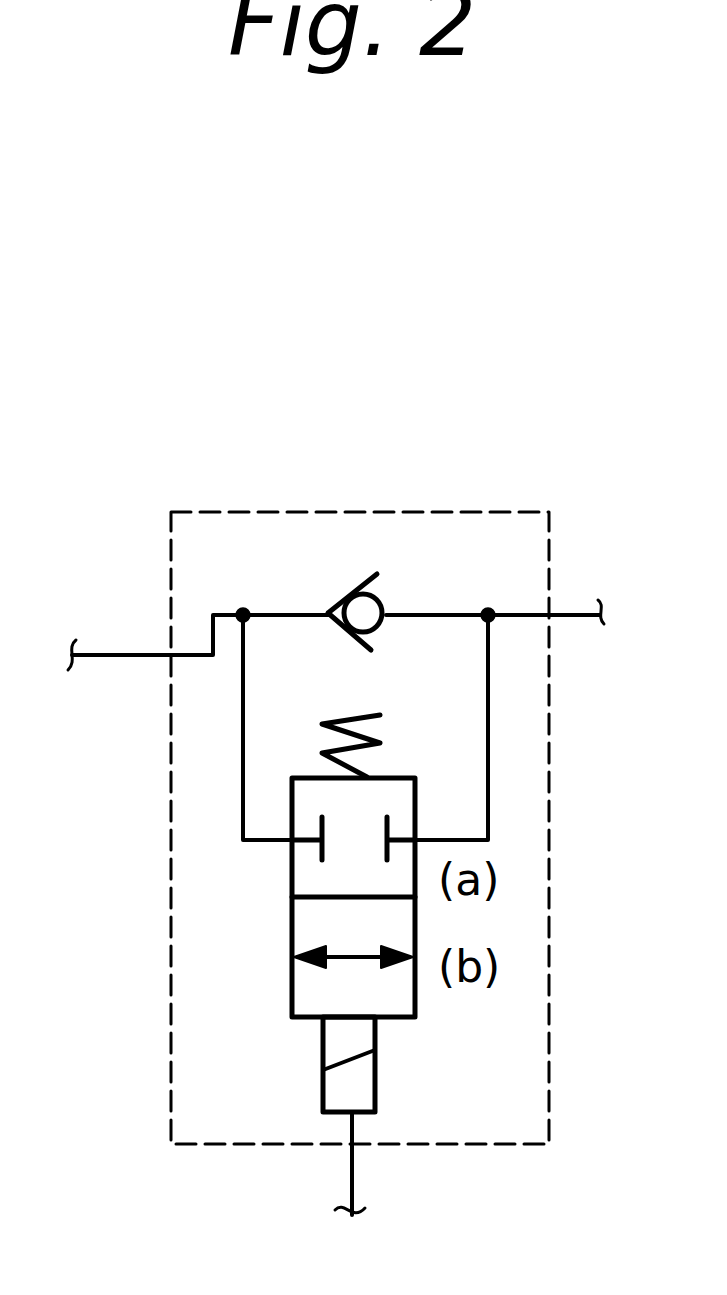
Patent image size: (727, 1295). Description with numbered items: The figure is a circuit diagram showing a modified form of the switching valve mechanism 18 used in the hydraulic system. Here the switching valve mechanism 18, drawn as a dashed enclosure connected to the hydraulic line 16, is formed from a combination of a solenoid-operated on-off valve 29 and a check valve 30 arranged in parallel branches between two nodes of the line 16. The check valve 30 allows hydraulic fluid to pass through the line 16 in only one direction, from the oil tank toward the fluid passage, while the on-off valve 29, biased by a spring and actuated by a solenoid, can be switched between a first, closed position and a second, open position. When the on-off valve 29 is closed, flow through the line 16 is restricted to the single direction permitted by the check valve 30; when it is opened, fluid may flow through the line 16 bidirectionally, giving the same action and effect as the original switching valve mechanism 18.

The line 16 is at (125, 656).
The switching valve mechanism 18 is at (428, 510).
The solenoid-operated on-off valve 29 is at (317, 988).
The check valve 30 is at (342, 600).